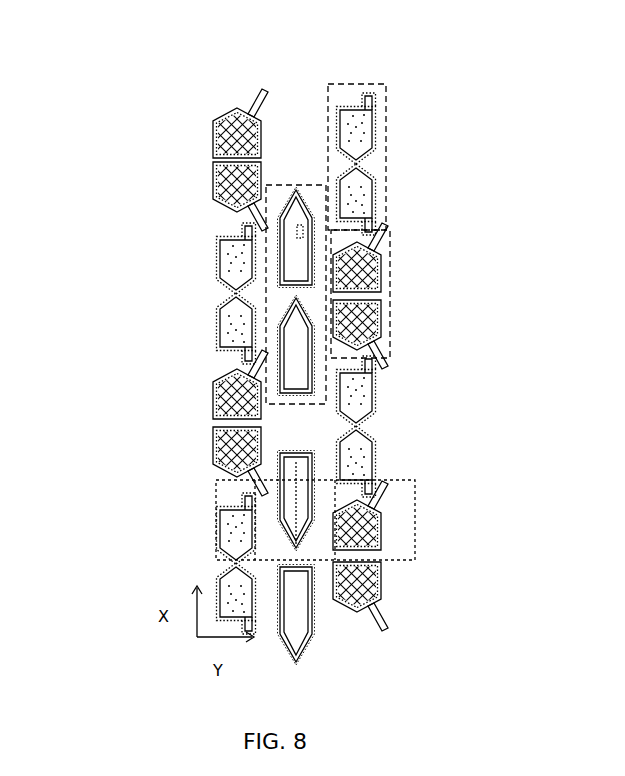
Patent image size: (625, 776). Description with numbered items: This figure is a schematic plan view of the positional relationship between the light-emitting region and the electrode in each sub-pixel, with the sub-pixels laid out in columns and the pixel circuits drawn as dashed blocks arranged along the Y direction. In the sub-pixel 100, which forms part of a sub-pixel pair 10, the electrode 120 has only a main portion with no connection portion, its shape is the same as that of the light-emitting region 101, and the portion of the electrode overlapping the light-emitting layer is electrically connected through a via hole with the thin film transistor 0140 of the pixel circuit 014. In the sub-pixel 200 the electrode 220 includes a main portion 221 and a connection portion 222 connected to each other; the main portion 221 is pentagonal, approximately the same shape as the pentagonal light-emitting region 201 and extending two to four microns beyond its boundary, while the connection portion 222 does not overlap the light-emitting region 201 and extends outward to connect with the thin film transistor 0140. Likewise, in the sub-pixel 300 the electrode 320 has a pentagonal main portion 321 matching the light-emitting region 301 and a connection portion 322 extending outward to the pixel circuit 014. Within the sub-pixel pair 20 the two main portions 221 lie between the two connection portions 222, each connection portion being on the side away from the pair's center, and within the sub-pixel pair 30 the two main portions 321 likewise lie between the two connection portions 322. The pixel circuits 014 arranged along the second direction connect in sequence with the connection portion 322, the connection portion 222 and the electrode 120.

The sub-pixel pair 10 is at (325, 394).
The sub-pixel pair 20 is at (390, 159).
The sub-pixel pair 30 is at (393, 296).
The pixel circuit 014 is at (338, 493).
The thin film transistor 0140 is at (296, 190).
The sub-pixel 100 is at (167, 258).
The light-emitting region 101 is at (167, 258).
The electrode 120 is at (216, 237).
The sub-pixel 200 is at (178, 133).
The light-emitting region 201 is at (178, 133).
The electrode 220 is at (182, 93).
The main portion 221 is at (178, 113).
The connection portion 222 is at (201, 72).
The sub-pixel 300 is at (176, 322).
The light-emitting region 301 is at (176, 322).
The electrode 320 is at (176, 320).
The main portion 321 is at (176, 309).
The connection portion 322 is at (176, 360).